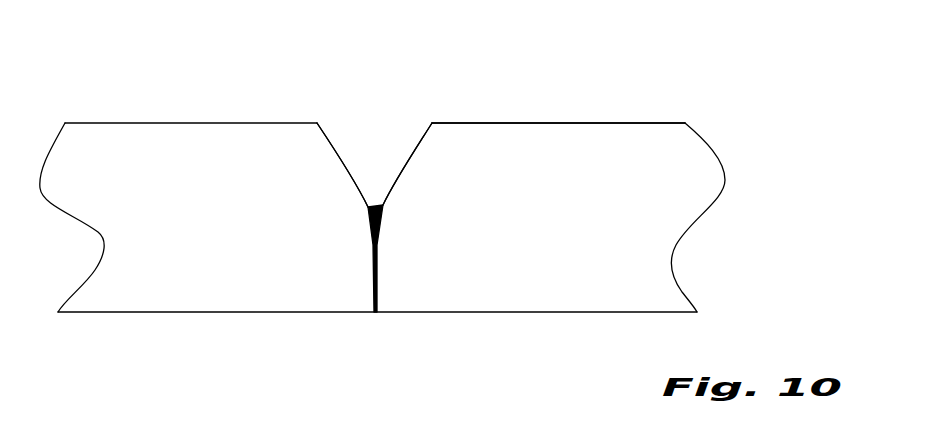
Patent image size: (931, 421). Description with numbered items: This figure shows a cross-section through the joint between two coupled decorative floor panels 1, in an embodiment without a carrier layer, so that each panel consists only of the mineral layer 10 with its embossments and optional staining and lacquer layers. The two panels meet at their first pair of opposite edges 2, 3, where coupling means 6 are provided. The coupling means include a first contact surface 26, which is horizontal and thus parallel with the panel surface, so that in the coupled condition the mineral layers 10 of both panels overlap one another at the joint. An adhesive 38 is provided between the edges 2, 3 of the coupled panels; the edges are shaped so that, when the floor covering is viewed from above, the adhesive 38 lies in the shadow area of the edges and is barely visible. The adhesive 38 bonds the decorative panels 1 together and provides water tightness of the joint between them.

The decorative floor panel 1 is at (265, 162).
The mineral layer 10 is at (186, 153).
The first edge of the first pair of opposite edges 2 is at (501, 62).
The second edge of the first pair of opposite edges 3 is at (282, 88).
The coupling means 6 is at (322, 87).
The first contact surface 26 is at (415, 192).
The adhesive 38 is at (368, 223).